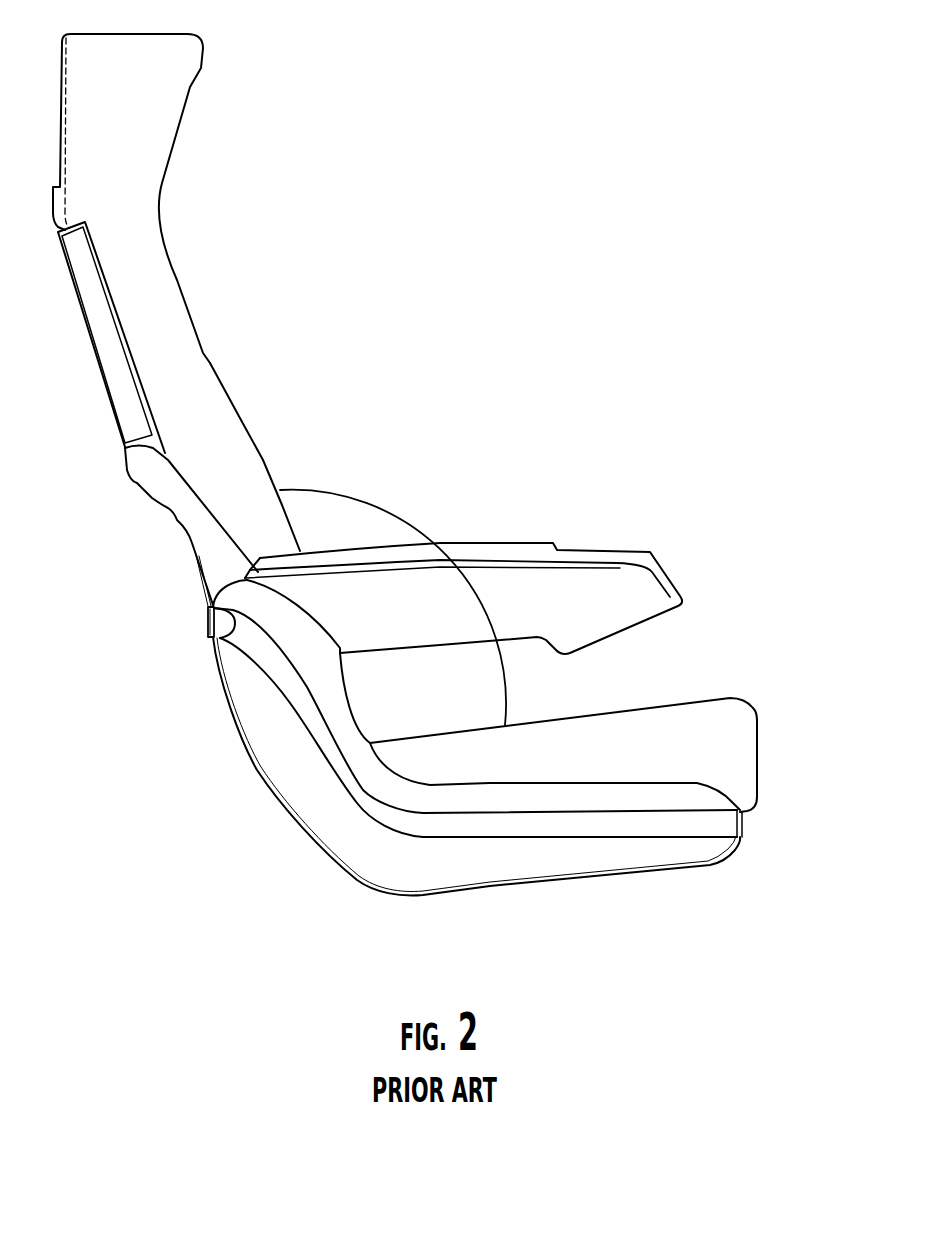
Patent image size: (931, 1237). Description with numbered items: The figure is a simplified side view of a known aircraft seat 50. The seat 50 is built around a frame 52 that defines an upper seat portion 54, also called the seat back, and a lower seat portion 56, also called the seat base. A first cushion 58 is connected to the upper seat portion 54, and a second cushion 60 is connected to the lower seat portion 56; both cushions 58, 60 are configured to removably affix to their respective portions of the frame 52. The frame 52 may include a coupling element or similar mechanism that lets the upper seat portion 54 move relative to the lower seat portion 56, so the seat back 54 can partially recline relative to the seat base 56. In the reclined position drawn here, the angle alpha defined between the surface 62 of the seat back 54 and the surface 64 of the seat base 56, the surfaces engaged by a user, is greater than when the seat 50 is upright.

The seat 50 is at (561, 244).
The frame 52 is at (217, 640).
The upper seat portion 54 is at (255, 295).
The lower seat portion 56 is at (685, 657).
The first cushion 58 is at (130, 202).
The second cushion 60 is at (643, 747).
The surface of the seat back 62 is at (237, 403).
The surface of the seat base 64 is at (590, 713).